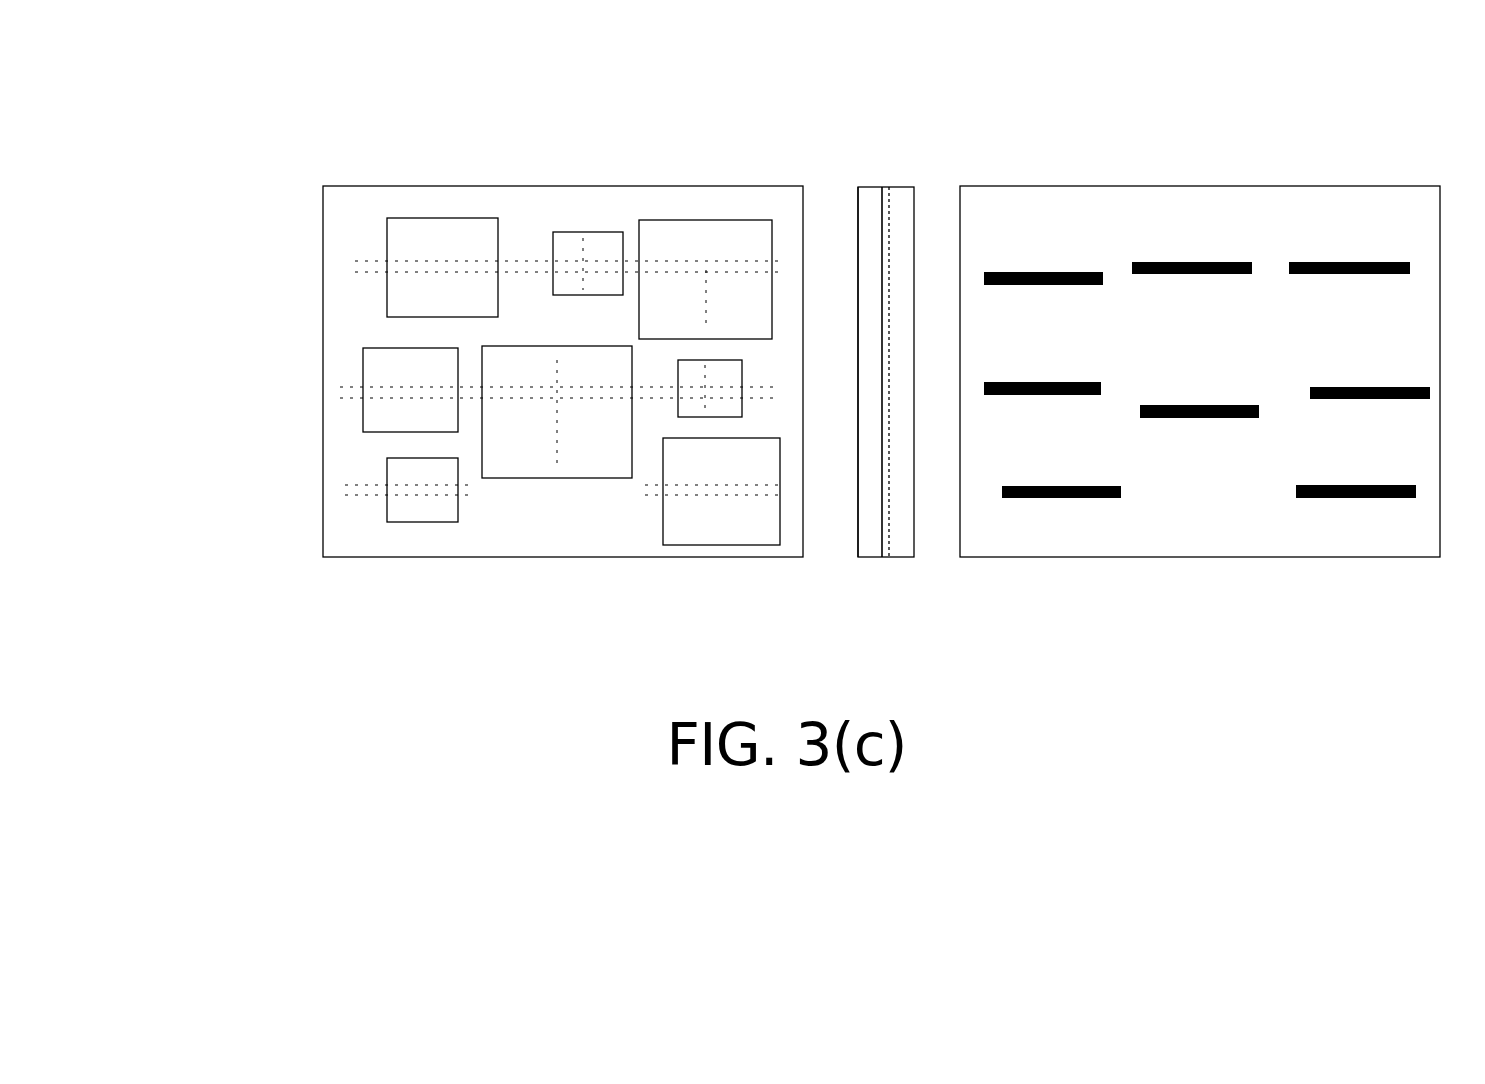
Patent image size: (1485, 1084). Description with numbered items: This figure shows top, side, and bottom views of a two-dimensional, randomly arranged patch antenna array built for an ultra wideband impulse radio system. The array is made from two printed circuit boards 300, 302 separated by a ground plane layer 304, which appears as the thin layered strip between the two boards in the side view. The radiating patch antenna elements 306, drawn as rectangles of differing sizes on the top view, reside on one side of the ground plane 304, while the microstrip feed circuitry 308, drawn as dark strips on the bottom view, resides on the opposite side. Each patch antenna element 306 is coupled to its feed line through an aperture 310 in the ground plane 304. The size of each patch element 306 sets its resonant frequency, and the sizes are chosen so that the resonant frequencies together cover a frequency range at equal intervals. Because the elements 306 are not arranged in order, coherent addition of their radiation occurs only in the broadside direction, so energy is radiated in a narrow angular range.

The printed circuit board 300 is at (875, 197).
The printed circuit board 302 is at (905, 197).
The ground plane layer 304 is at (878, 543).
The patch antenna elements 306 is at (402, 240).
The microstrip feed circuitry 308 is at (363, 492).
The apertures 310 is at (403, 367).